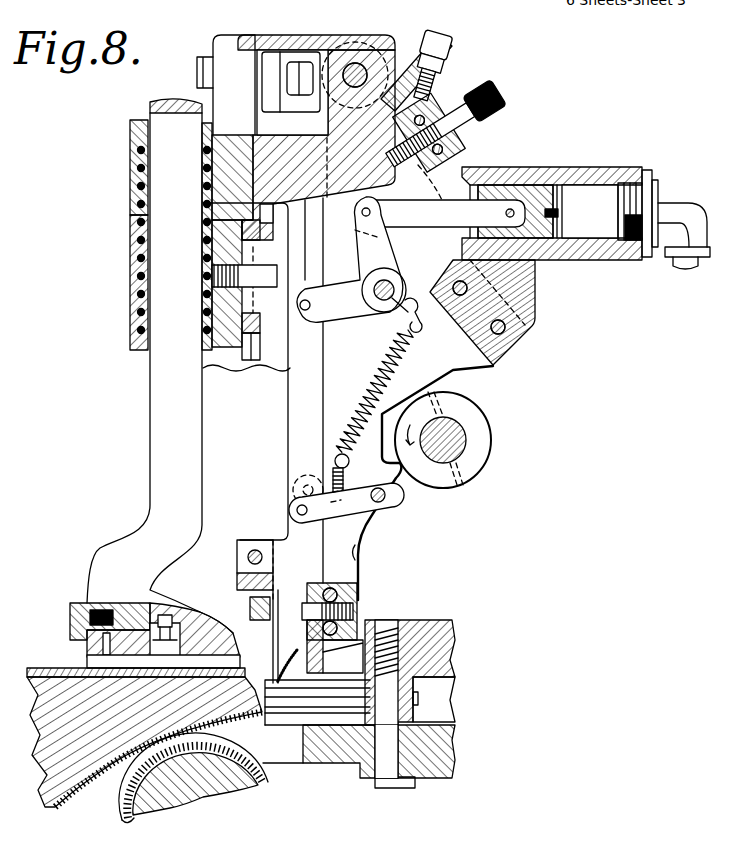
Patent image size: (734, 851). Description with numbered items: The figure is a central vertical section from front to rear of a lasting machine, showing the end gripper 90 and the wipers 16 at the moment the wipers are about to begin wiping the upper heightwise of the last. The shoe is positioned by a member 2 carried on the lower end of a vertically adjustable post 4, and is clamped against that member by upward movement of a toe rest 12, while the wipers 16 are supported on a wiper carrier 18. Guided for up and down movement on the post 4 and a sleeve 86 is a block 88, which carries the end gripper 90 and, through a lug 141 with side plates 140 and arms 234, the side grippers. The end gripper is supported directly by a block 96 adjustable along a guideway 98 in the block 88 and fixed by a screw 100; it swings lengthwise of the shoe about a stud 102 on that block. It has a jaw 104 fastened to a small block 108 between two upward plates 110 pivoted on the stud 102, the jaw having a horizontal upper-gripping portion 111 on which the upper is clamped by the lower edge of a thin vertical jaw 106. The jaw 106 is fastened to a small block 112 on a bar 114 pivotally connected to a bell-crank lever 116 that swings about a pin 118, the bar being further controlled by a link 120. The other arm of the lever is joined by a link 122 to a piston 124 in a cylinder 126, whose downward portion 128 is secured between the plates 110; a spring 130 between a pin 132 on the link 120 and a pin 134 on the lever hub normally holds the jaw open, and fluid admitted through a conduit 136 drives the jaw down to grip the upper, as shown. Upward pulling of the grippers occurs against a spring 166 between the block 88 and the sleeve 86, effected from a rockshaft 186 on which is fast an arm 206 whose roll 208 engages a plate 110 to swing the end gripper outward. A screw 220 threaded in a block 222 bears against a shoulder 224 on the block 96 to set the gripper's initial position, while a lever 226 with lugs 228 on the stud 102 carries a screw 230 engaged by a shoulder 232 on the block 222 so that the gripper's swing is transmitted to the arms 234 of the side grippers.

The member 2 is at (90, 660).
The rod or post 4 is at (151, 394).
The toe rest 12 is at (187, 800).
The wipers 16 is at (270, 690).
The wiper carrier 18 is at (337, 757).
The sleeve 86 is at (143, 124).
The block 88 is at (131, 233).
The end gripper 90 is at (369, 592).
The block 96 is at (342, 202).
The guideway 98 is at (247, 354).
The screw 100 is at (268, 277).
The stud 102 is at (357, 64).
The upper-gripping jaw 104 is at (317, 673).
The upper-gripping jaw 106 is at (277, 633).
The small block 108 is at (355, 618).
The plates 110 is at (358, 551).
The upper-gripping portion 111 is at (283, 702).
The small block 112 is at (240, 581).
The bar 114 is at (290, 406).
The bell-crank lever 116 is at (352, 312).
The pin 118 is at (393, 283).
The link 120 is at (352, 502).
The link 122 is at (421, 220).
The piston 124 is at (540, 188).
The cylinder 126 is at (605, 164).
The downwardly extending portion 128 is at (530, 323).
The spring 130 is at (396, 364).
The pin 132 is at (395, 491).
The pin 134 is at (414, 314).
The conduit 136 is at (694, 268).
The plates 140 is at (234, 110).
The lug 141 is at (228, 43).
The spring 166 is at (138, 199).
The rockshaft 186 is at (468, 448).
The arm 206 is at (332, 458).
The roll 208 is at (294, 492).
The screw 220 is at (500, 99).
The block 222 is at (455, 146).
The shoulder 224 is at (422, 173).
The lever 226 is at (312, 37).
The lugs 228 is at (388, 52).
The screw 230 is at (444, 44).
The shoulder 232 is at (425, 106).
The arms 234 is at (292, 100).